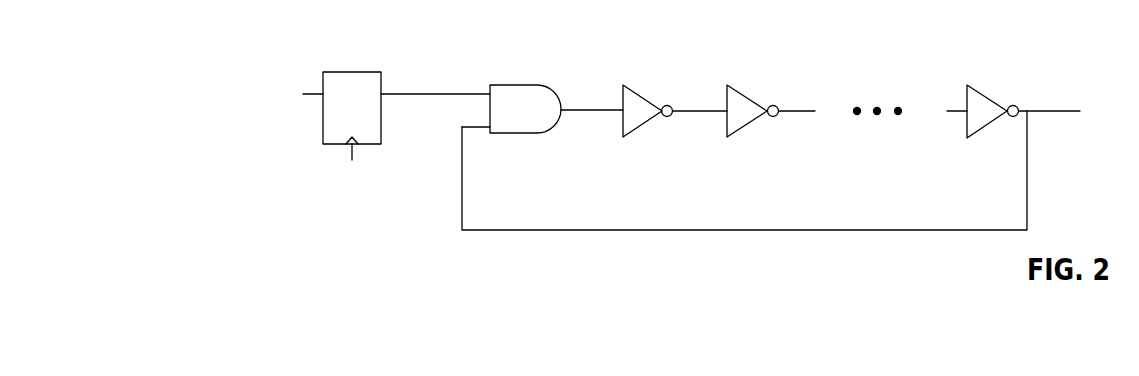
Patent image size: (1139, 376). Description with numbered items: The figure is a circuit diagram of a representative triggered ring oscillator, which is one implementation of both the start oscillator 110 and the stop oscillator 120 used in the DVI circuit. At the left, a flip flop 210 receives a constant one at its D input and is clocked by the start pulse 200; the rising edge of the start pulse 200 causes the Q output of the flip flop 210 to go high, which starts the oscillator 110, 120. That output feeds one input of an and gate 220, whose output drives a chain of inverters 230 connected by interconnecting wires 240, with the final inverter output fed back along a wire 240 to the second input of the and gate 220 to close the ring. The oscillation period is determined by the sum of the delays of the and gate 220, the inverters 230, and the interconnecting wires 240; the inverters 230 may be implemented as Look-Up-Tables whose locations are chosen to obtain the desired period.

The start pulse 200 is at (353, 200).
The flip flop 210 is at (352, 72).
The and gate 220 is at (545, 122).
The inverters 230 is at (643, 97).
The interconnecting wires 240 is at (694, 128).
The start oscillator 110 is at (846, 71).
The stop oscillator 120 is at (648, 111).